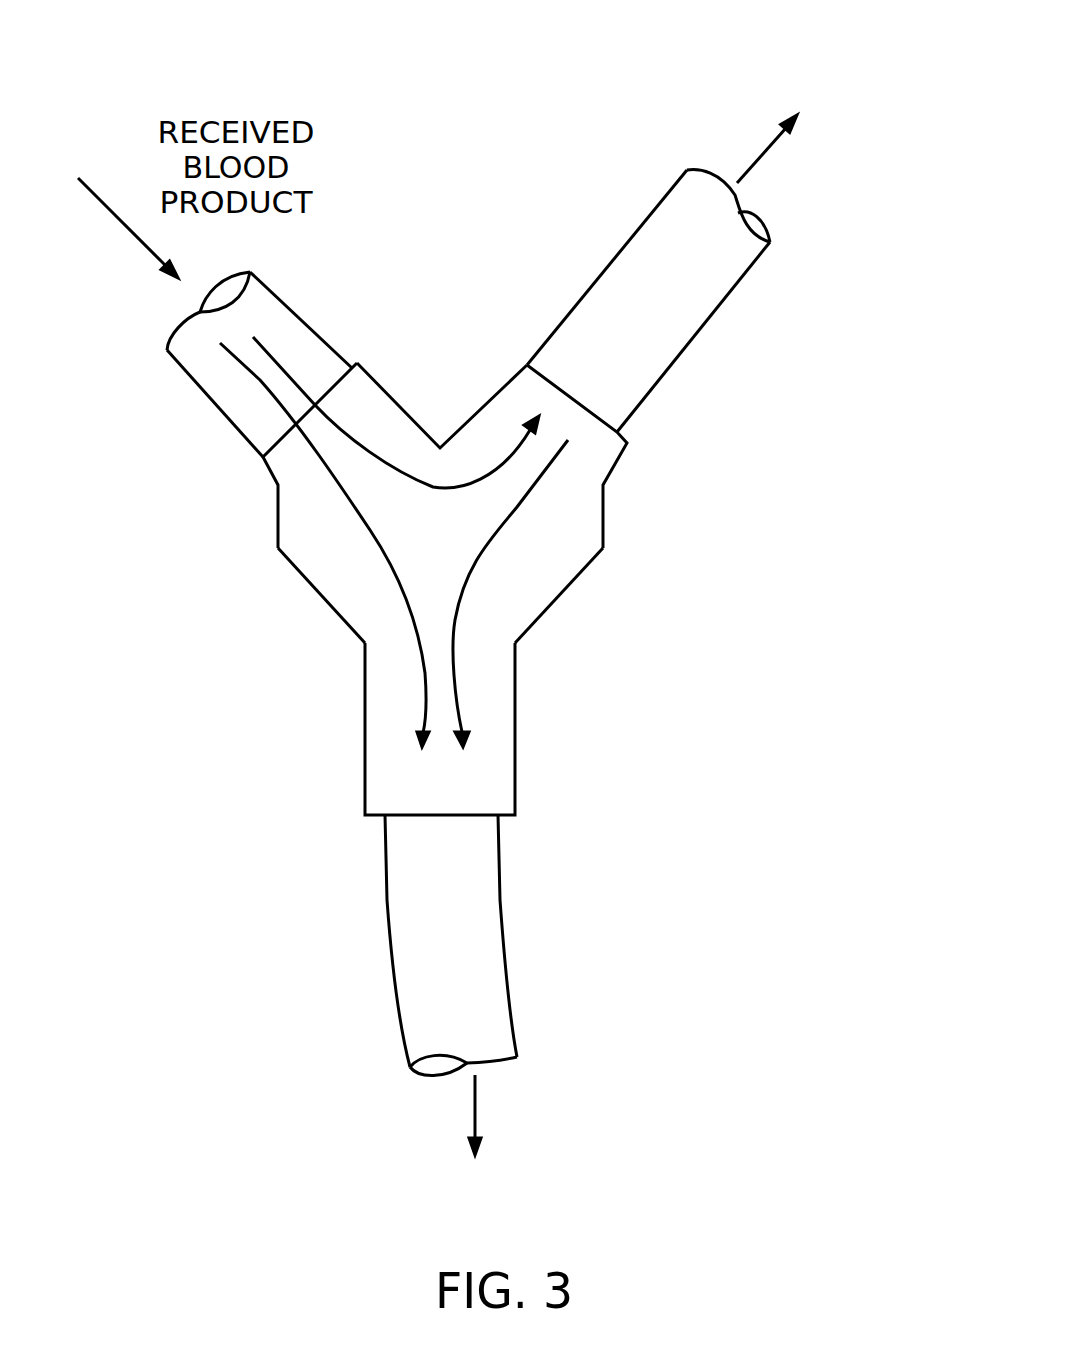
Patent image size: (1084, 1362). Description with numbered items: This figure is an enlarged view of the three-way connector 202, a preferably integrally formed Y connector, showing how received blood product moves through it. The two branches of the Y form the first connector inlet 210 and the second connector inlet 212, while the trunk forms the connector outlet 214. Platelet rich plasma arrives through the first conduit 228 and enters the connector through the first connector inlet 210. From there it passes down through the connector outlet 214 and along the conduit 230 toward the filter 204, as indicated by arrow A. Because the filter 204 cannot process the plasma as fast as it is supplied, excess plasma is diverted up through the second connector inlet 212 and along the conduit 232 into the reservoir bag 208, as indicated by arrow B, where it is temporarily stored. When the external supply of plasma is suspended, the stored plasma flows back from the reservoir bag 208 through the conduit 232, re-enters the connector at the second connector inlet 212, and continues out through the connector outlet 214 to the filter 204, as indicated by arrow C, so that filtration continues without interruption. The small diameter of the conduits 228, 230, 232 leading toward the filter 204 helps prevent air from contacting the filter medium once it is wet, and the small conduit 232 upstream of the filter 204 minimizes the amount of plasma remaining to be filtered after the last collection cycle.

The three-way connector 202 is at (453, 598).
The filter 204 is at (491, 1141).
The reservoir bag 208 is at (837, 92).
The first connector inlet 210 is at (278, 505).
The second connector inlet 212 is at (623, 453).
The connector outlet 214 is at (517, 783).
The first conduit 228 is at (293, 307).
The conduit 230 is at (503, 960).
The conduit 232 is at (757, 213).
The arrow A is at (383, 550).
The arrow B is at (332, 420).
The arrow C is at (493, 535).